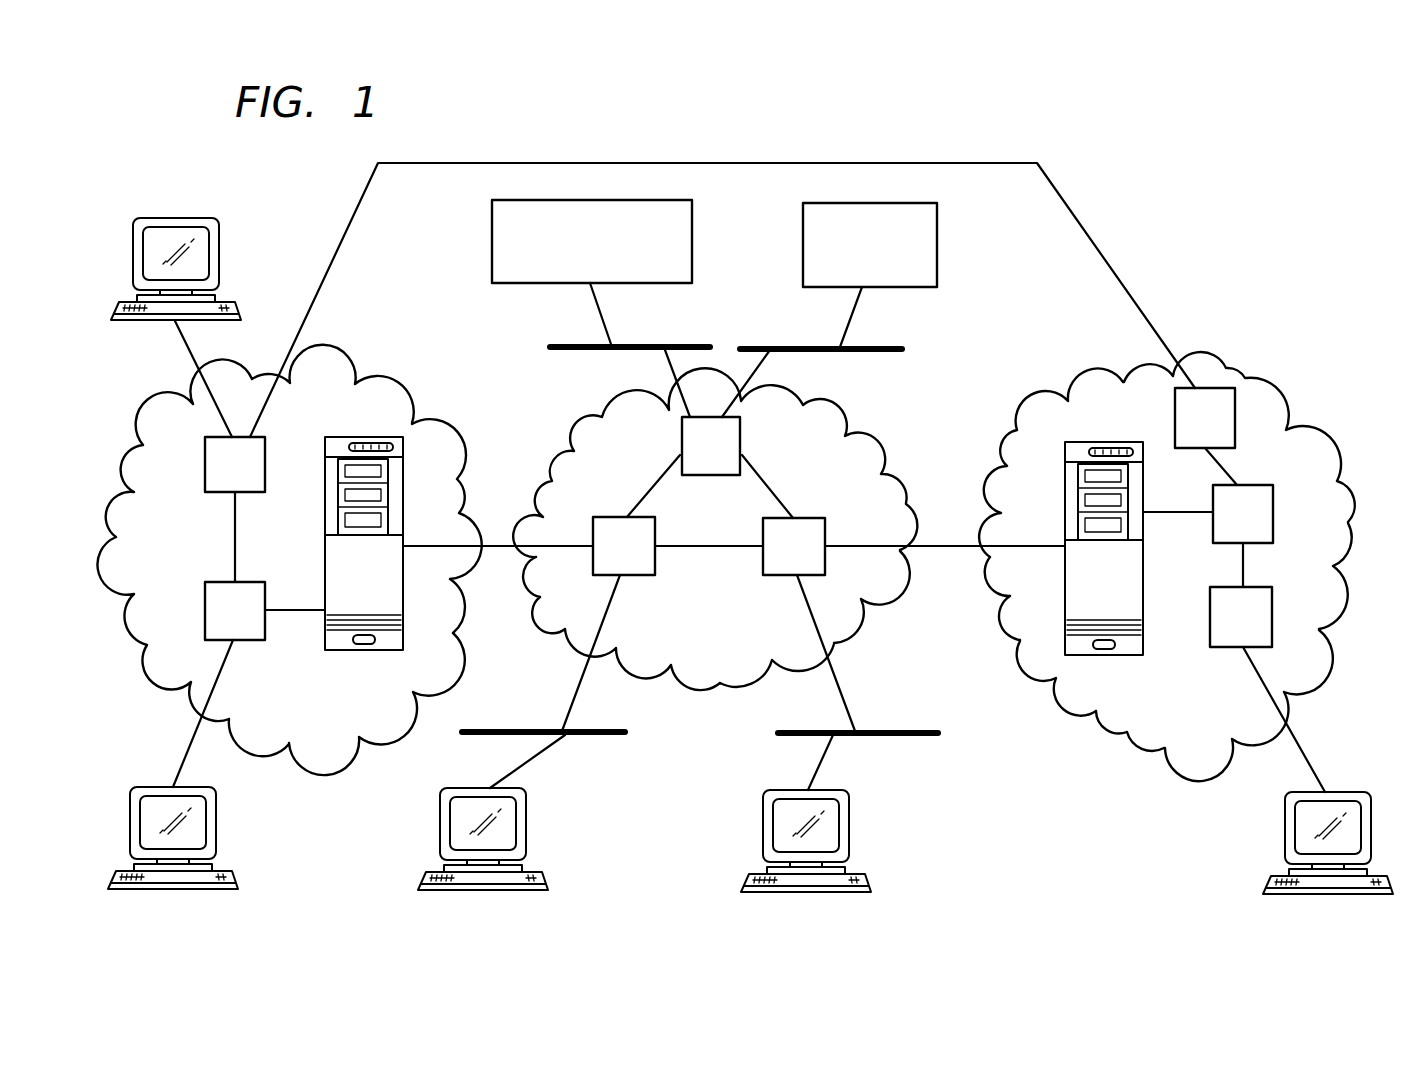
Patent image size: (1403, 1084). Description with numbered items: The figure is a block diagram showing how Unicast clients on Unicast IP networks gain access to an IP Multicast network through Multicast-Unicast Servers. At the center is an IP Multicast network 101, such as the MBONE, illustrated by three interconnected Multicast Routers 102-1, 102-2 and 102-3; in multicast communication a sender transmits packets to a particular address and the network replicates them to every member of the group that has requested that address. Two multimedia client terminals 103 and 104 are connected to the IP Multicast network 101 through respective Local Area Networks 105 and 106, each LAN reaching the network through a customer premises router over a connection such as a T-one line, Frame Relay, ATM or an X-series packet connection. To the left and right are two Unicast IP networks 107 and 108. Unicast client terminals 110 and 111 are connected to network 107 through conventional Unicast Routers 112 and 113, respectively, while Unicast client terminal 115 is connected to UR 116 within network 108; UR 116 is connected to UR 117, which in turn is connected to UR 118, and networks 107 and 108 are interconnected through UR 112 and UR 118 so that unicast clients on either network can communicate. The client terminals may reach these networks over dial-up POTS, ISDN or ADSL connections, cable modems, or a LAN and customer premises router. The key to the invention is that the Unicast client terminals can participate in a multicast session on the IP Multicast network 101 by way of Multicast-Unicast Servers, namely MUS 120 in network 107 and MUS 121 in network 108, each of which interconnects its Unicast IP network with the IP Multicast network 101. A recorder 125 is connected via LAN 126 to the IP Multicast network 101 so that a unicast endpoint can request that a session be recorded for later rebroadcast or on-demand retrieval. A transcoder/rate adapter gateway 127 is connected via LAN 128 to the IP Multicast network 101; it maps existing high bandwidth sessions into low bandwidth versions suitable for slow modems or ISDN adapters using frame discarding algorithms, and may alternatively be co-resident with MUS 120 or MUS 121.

The IP Multicast network 101 is at (694, 690).
The Multicast Router 102-1 is at (609, 517).
The Multicast Router 102-2 is at (740, 440).
The Multicast Router 102-3 is at (800, 518).
The client terminal 103 is at (527, 831).
The client terminal 104 is at (850, 831).
The Local Area Network 105 is at (534, 730).
The Local Area Network 106 is at (908, 730).
The Unicast IP network 107 is at (328, 779).
The Unicast IP network 108 is at (1150, 762).
The Unicast client terminal 110 is at (174, 217).
The Unicast client terminal 111 is at (134, 787).
The Unicast Router 112 is at (205, 466).
The Unicast Router 113 is at (205, 594).
The Unicast client terminal 115 is at (1360, 792).
The Unicast Router 116 is at (1272, 592).
The Unicast Router 117 is at (1213, 540).
The Unicast Router 118 is at (1175, 430).
The Multicast-Unicast Server 120 is at (350, 437).
The Multicast-Unicast Server 121 is at (1106, 442).
The recorder 125 is at (937, 236).
The LAN 126 is at (902, 349).
The transcoder/rate adapter gateway 127 is at (495, 256).
The LAN 128 is at (550, 347).